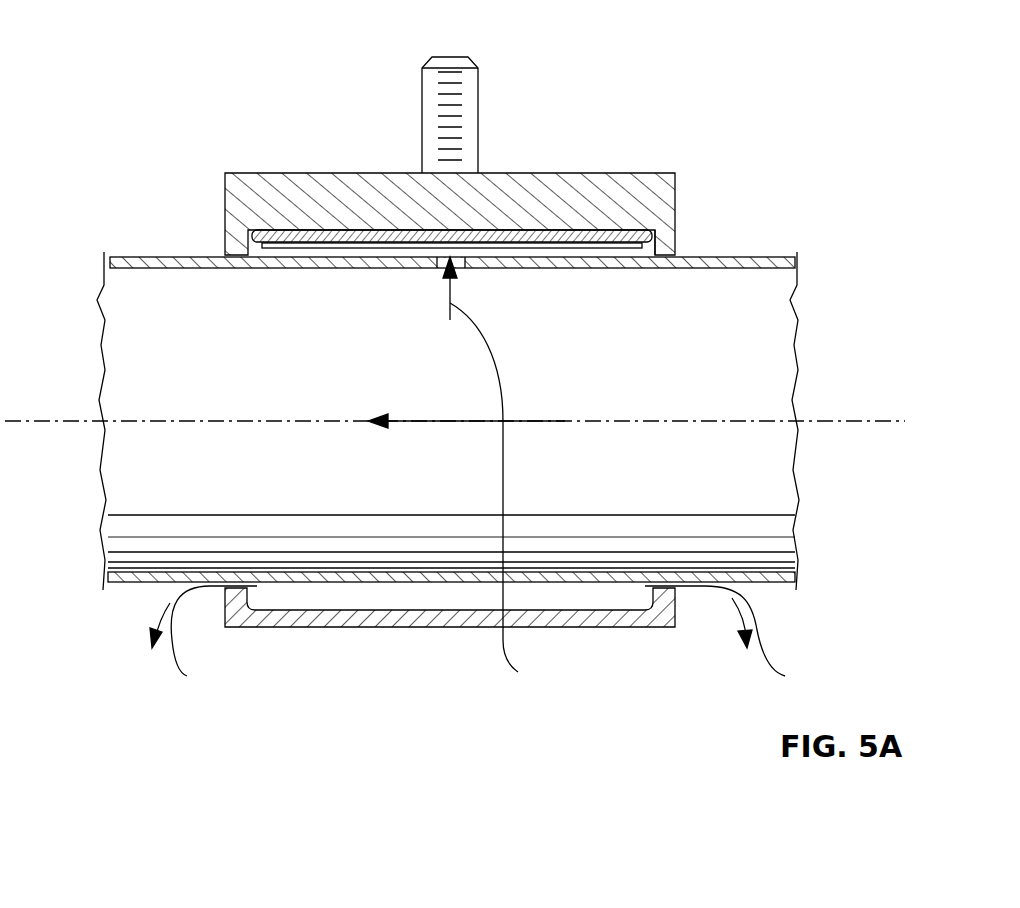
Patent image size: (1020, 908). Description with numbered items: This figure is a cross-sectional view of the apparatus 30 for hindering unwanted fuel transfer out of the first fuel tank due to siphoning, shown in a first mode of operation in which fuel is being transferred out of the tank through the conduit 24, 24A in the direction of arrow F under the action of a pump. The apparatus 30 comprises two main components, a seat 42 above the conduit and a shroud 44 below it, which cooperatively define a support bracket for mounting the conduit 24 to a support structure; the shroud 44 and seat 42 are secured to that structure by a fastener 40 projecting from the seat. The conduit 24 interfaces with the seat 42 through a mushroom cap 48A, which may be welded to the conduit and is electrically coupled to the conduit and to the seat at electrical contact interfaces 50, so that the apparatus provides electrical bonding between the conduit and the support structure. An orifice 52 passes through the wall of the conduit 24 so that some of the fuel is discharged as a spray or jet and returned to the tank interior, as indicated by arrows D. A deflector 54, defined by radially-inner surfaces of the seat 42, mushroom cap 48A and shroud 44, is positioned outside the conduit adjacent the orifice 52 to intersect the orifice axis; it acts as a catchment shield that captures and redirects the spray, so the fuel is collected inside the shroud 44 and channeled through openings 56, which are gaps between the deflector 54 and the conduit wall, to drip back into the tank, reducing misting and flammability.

The apparatus 30 is at (140, 78).
The fastener 40 is at (420, 85).
The seat 42 is at (298, 173).
The mushroom cap 48A is at (529, 232).
The electrical contact interface 50 is at (648, 257).
The conduit 24 is at (730, 257).
The pipe wall portion 24A is at (451, 548).
The deflector 54 is at (292, 246).
The orifice 52 is at (425, 280).
The shroud 44 is at (318, 627).
The opening 56 is at (285, 598).
The arrows D is at (483, 475).
The arrow F is at (422, 421).